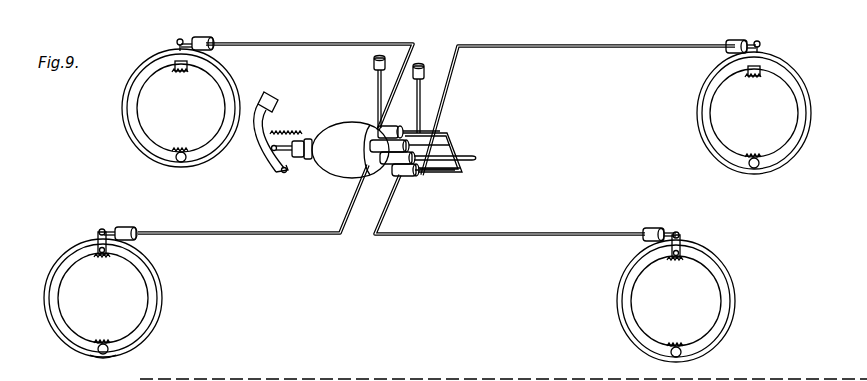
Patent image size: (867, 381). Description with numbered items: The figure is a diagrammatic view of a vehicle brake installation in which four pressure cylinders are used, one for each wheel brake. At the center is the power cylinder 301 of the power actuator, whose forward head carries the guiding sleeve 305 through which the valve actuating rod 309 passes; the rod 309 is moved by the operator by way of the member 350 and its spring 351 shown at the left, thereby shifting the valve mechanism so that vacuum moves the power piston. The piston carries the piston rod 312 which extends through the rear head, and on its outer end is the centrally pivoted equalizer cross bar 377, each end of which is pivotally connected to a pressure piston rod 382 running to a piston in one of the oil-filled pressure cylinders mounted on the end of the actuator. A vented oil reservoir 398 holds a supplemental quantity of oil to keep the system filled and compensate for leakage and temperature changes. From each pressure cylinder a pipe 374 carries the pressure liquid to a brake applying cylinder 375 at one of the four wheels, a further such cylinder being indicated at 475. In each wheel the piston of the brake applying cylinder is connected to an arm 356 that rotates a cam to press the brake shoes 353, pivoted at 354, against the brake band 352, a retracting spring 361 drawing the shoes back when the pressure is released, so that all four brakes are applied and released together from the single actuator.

The power cylinder 301 is at (336, 168).
The guiding sleeve 305 is at (306, 160).
The valve actuating rod 309 is at (275, 162).
The piston rod 312 is at (462, 158).
The foot pedal 350 is at (265, 138).
The spring 351 is at (292, 122).
The brake band 352 is at (805, 152).
The brake shoes 353 is at (136, 128).
The brake shoe pivot 354 is at (98, 356).
The arm 356 is at (96, 232).
The retracting spring 361 is at (102, 343).
The pipe 374 is at (292, 46).
The brake applying cylinder 375 is at (207, 40).
The equalizer cross bar 377 is at (450, 134).
The pressure piston rod 382 is at (448, 172).
The oil reservoir 398 is at (374, 66).
The brake applying cylinder 475 is at (211, 376).